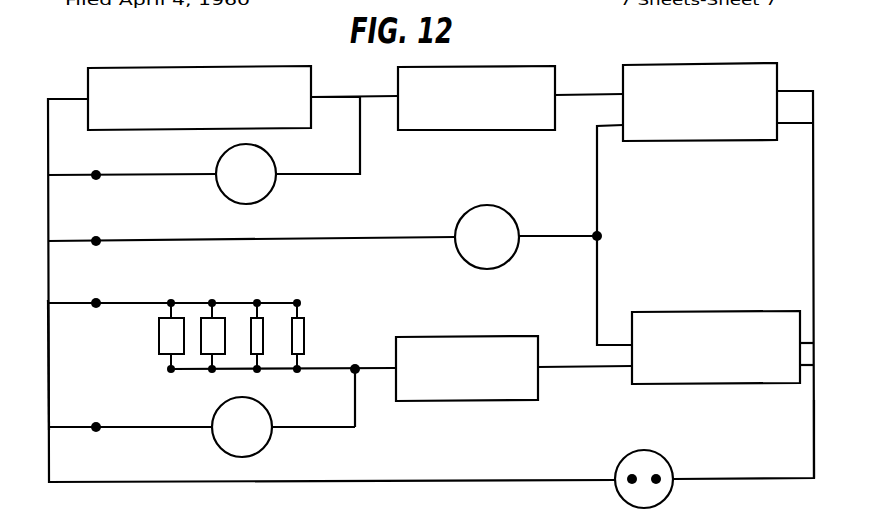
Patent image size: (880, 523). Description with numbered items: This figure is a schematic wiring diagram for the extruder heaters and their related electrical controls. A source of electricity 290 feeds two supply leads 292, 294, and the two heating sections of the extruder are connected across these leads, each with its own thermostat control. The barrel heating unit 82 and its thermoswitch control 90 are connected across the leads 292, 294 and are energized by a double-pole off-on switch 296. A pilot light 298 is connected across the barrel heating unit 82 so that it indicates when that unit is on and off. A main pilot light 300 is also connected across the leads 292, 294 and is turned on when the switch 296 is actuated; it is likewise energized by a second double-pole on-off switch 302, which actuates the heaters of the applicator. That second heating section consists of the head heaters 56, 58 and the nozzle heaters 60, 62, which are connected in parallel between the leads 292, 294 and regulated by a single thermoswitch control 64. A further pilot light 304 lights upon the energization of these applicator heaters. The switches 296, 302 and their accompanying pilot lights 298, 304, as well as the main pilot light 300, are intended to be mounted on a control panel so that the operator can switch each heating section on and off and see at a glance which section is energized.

The barrel heating unit 82 is at (243, 50).
The thermoswitch control 90 is at (513, 67).
The double-pole off-on switch 296 is at (672, 63).
The pilot light 298 is at (273, 188).
The main pilot light 300 is at (505, 212).
The thermoswitch control 64 is at (485, 335).
The second double-pole on-off switch 302 is at (693, 311).
The pilot light 304 is at (267, 442).
The source of electricity 290 is at (666, 457).
The lead 292 is at (50, 395).
The lead 294 is at (813, 445).
The head heater 56 is at (159, 330).
The head heater 58 is at (214, 323).
The nozzle heater 60 is at (265, 323).
The nozzle heater 62 is at (305, 332).